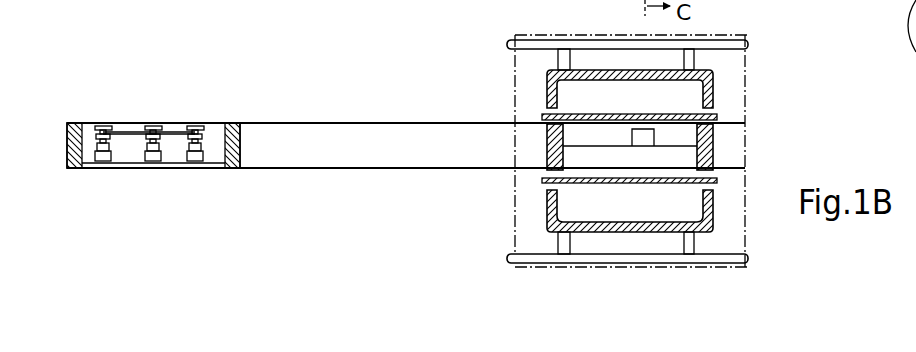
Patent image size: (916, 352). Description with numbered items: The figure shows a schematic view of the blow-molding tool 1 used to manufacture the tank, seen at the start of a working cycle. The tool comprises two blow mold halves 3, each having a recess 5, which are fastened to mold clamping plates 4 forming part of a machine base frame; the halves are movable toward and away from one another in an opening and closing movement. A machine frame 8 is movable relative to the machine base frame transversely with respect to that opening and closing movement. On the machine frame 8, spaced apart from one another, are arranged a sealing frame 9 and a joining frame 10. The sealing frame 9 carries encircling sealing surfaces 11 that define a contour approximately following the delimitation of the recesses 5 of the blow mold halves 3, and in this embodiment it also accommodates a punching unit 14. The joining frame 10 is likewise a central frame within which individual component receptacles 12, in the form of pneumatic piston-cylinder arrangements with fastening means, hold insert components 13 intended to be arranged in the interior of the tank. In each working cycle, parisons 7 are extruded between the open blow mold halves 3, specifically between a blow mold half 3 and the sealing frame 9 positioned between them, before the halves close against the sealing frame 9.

The blow-molding tool 1 is at (400, 3).
The blow mold halves 3 is at (712, 85).
The mold clamping plates 4 is at (725, 46).
The recess 5 is at (615, 85).
The parisons 7 is at (617, 178).
The machine frame 8 is at (385, 135).
The sealing frame 9 is at (713, 150).
The joining frame 10 is at (72, 167).
The sealing surfaces 11 is at (712, 124).
The component receptacles 12 is at (205, 195).
The insert components 13 is at (197, 122).
The punching unit 14 is at (640, 145).